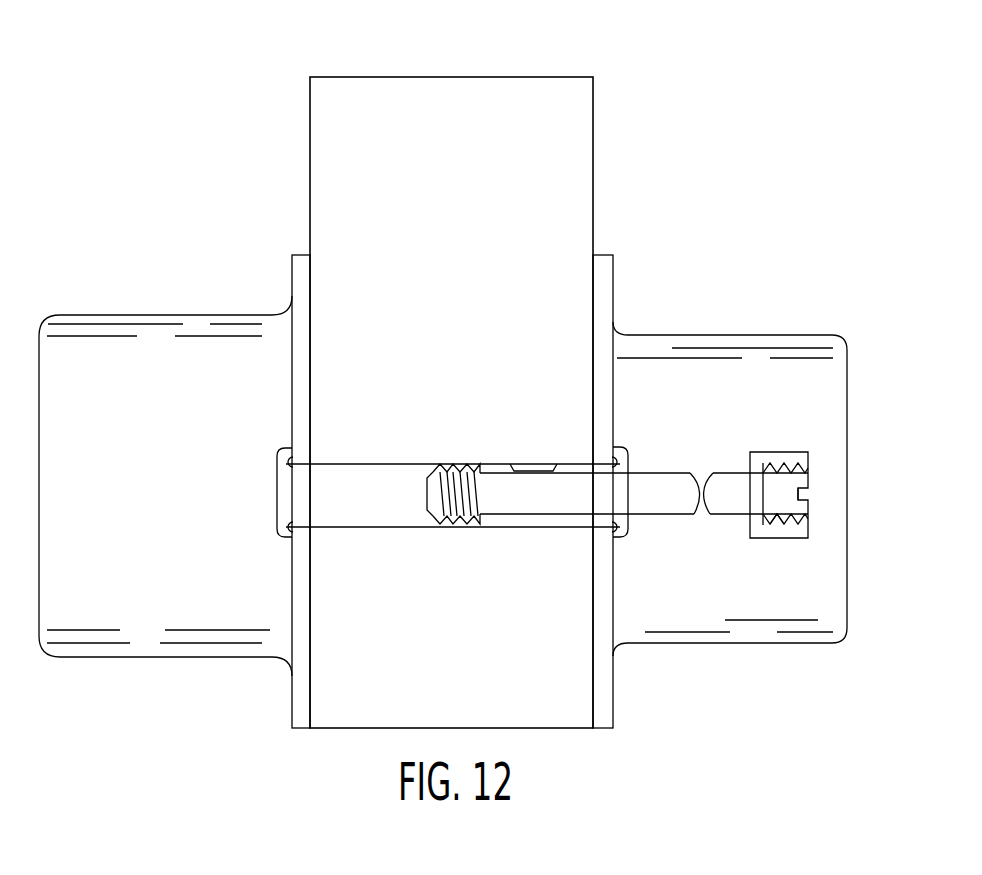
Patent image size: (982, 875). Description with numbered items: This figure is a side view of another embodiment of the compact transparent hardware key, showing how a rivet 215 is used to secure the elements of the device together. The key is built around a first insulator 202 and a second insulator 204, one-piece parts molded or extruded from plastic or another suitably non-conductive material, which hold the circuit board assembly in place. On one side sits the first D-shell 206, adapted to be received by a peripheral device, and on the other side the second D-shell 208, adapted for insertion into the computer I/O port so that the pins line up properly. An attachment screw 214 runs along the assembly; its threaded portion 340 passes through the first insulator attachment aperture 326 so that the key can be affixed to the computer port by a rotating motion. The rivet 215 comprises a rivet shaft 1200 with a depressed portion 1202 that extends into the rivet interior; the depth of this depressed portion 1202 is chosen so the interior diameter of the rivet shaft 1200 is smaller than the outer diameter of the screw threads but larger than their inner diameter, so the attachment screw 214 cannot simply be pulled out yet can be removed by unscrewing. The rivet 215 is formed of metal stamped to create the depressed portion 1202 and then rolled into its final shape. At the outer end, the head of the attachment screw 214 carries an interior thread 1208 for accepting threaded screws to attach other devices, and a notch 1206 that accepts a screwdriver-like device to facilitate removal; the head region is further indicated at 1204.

The first insulator 202 is at (500, 77).
The second insulator 204 is at (310, 128).
The first D-shell 206 is at (725, 335).
The second D-shell 208 is at (167, 315).
The attachment screw 214 is at (740, 412).
The rivet 215 is at (270, 536).
The first insulator attachment aperture 326 is at (331, 463).
The threaded portion 340 is at (465, 463).
The rivet shaft 1200 is at (402, 463).
The depressed portion 1202 is at (537, 456).
The nut 1204 is at (808, 468).
The notch 1206 is at (813, 495).
The interior thread 1208 is at (790, 519).